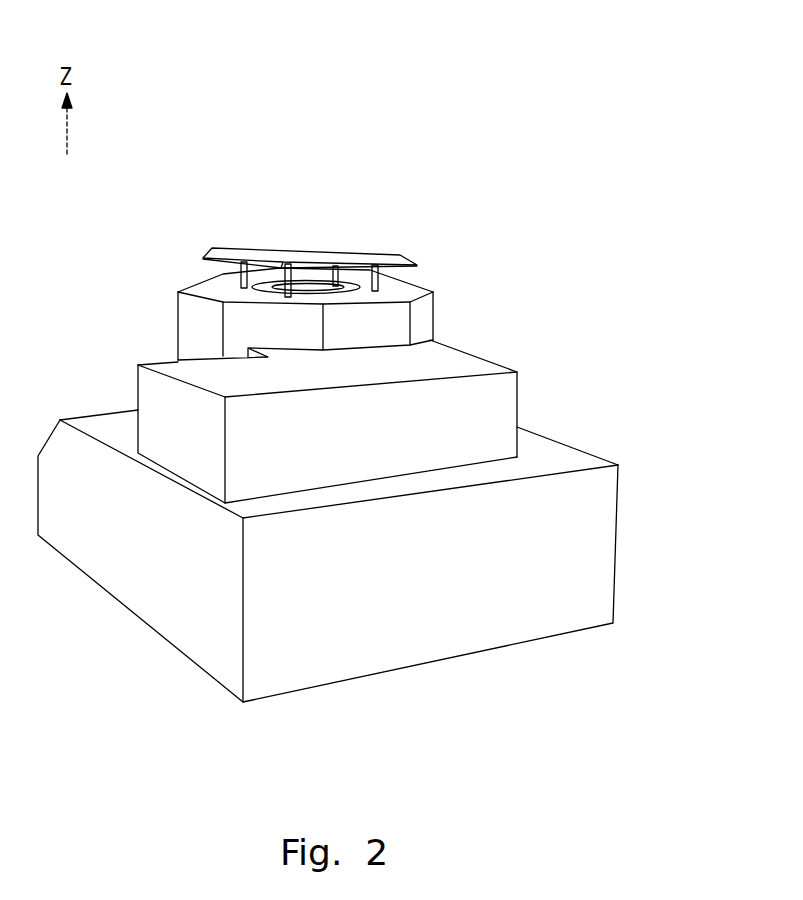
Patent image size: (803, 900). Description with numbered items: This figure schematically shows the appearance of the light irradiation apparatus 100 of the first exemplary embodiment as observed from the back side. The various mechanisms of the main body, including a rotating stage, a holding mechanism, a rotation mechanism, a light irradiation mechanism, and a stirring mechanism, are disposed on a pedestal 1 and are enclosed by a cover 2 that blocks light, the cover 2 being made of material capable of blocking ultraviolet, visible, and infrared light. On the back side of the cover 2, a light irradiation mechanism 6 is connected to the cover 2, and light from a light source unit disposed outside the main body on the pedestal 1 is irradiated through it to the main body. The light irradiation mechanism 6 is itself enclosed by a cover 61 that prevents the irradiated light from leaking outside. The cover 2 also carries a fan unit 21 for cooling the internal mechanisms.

The light irradiation apparatus 100 is at (352, 118).
The pedestal 1 is at (648, 467).
The light irradiation mechanism 6 is at (517, 343).
The cover 61 is at (510, 407).
The cover 2 is at (448, 259).
The fan unit 21 is at (245, 292).